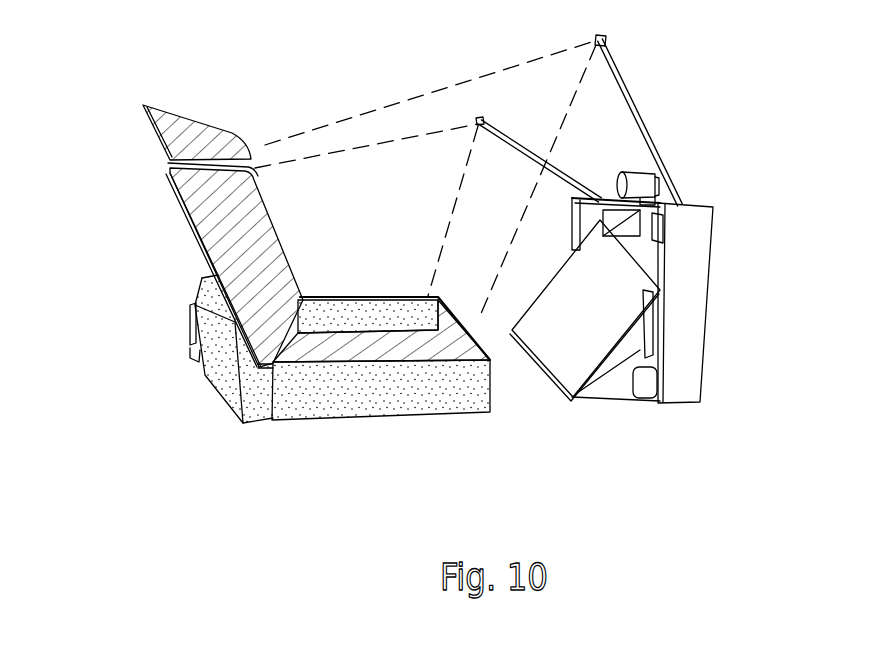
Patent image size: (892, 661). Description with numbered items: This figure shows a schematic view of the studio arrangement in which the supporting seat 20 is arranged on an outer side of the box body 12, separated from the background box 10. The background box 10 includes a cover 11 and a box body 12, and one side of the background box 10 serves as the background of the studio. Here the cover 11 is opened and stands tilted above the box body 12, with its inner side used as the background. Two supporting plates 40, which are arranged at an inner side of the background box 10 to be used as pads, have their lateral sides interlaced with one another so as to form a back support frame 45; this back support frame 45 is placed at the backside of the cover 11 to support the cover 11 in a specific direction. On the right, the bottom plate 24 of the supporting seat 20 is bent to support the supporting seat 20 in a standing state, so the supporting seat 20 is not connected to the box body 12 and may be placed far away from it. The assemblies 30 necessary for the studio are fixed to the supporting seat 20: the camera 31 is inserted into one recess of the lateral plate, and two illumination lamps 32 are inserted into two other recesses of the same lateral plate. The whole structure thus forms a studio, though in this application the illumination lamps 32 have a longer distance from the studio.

The background box 10 is at (167, 190).
The cover 11 is at (193, 240).
The box body 12 is at (357, 297).
The supporting seat 20 is at (718, 290).
The bottom plate 24 is at (563, 360).
The assemblies 30 is at (606, 119).
The camera 31 is at (637, 170).
The illumination lamps 32 is at (637, 102).
The supporting plates 40 is at (220, 385).
The back support frame 45 is at (186, 333).